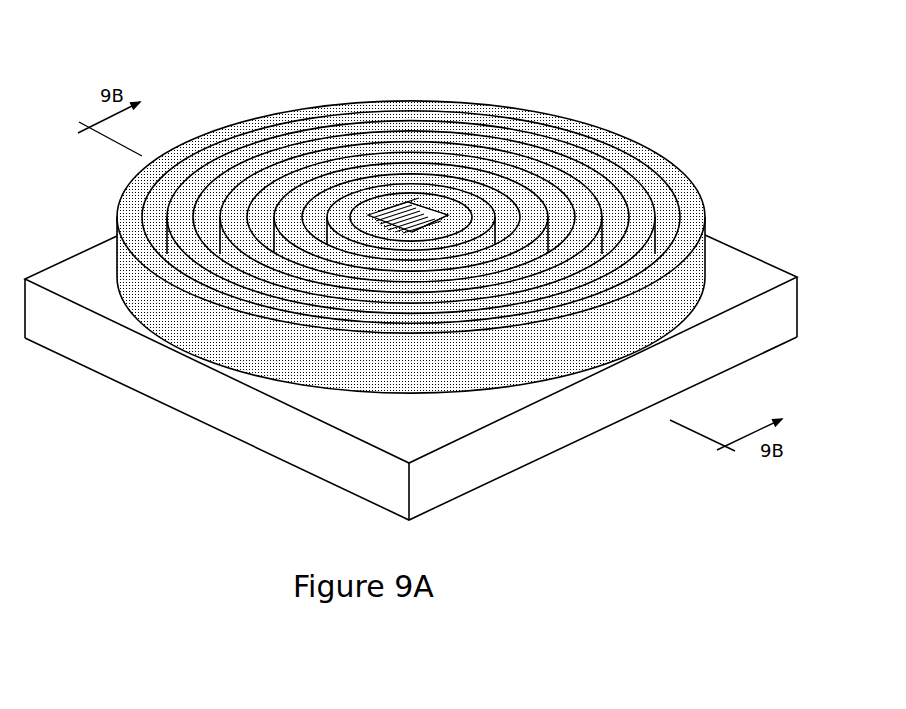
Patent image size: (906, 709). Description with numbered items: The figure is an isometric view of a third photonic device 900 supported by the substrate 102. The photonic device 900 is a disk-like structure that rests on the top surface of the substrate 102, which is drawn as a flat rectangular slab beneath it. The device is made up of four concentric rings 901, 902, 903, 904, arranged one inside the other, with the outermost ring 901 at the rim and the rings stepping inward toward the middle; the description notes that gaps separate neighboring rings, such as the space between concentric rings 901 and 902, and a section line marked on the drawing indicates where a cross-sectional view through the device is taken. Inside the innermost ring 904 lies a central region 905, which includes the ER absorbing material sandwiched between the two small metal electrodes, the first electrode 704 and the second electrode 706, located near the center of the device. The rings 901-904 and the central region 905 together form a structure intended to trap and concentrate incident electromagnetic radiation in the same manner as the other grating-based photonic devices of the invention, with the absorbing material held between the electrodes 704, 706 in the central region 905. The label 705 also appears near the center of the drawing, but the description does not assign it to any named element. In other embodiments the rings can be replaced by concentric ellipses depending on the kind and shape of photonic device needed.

The substrate 102 is at (513, 458).
The third photonic device 900 is at (667, 97).
The concentric ring 901 is at (567, 124).
The concentric ring 902 is at (506, 134).
The concentric ring 903 is at (454, 150).
The concentric ring 904 is at (406, 170).
The central region 905 is at (391, 194).
The first electrode 704 is at (395, 210).
The first contact 705 is at (432, 224).
The second electrode 706 is at (438, 211).